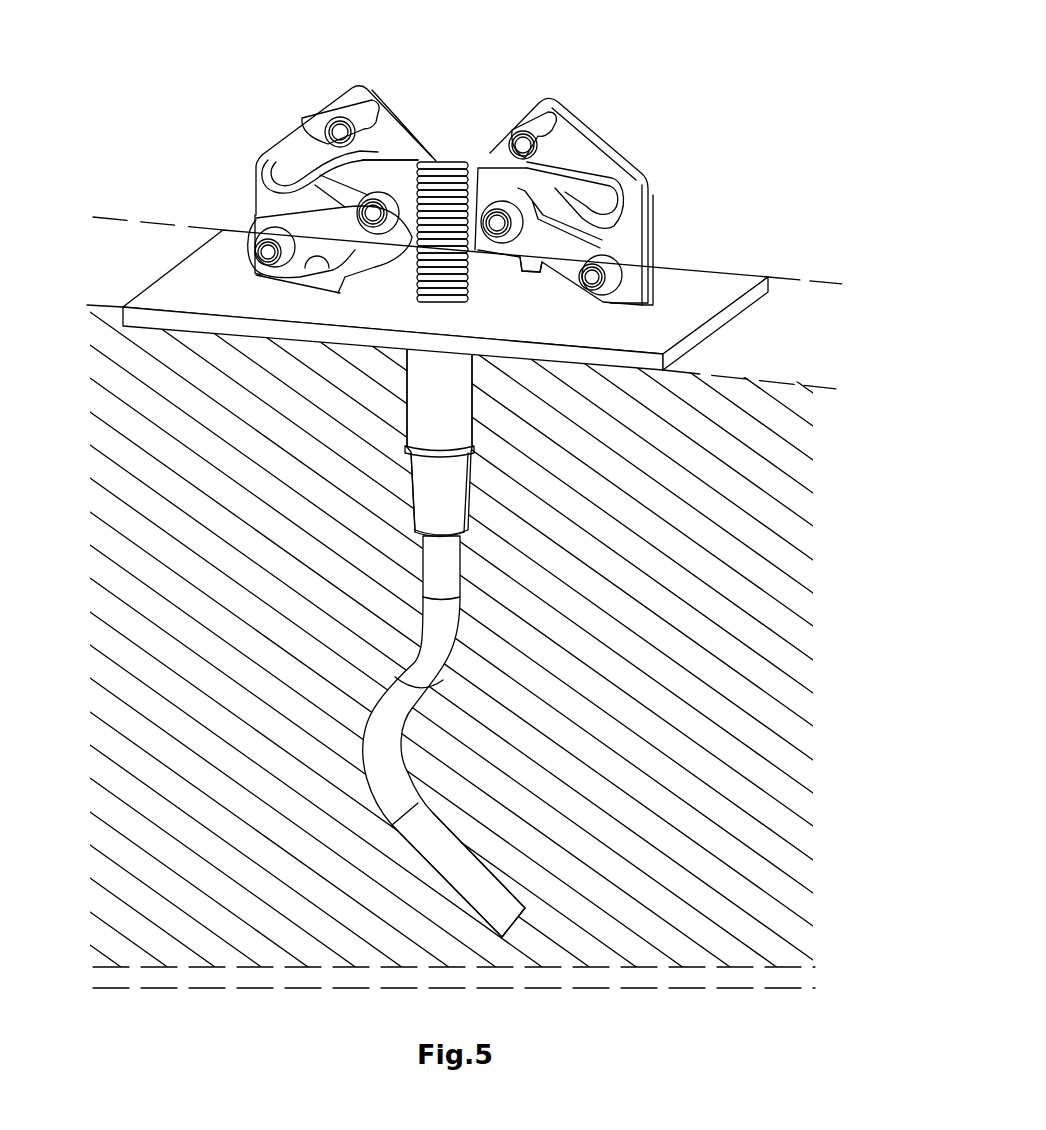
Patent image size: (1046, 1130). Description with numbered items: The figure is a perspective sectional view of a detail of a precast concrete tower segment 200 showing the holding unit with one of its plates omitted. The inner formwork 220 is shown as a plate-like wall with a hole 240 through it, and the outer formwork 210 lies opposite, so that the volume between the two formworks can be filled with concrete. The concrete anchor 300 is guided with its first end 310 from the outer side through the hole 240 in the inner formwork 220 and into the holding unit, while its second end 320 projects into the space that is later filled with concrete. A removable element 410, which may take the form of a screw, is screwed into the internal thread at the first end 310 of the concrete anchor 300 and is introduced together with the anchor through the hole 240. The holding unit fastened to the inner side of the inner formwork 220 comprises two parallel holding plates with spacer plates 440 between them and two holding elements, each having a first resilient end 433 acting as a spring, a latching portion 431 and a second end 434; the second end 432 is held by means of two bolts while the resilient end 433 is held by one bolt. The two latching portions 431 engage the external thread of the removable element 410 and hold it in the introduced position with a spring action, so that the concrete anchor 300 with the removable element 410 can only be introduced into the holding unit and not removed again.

The tower segment 200 is at (465, 565).
The outer formwork 210 is at (652, 986).
The inner formwork 220 is at (445, 300).
The hole 240 is at (473, 305).
The concrete anchor 300 is at (433, 660).
The first end 310 is at (458, 408).
The second end 320 is at (498, 882).
The removable element 410 is at (438, 162).
The latching portion 431 is at (470, 200).
The second end 432 is at (345, 258).
The resilient end 433 is at (305, 142).
The second end 434 is at (330, 242).
The spacer plate 440 is at (637, 237).